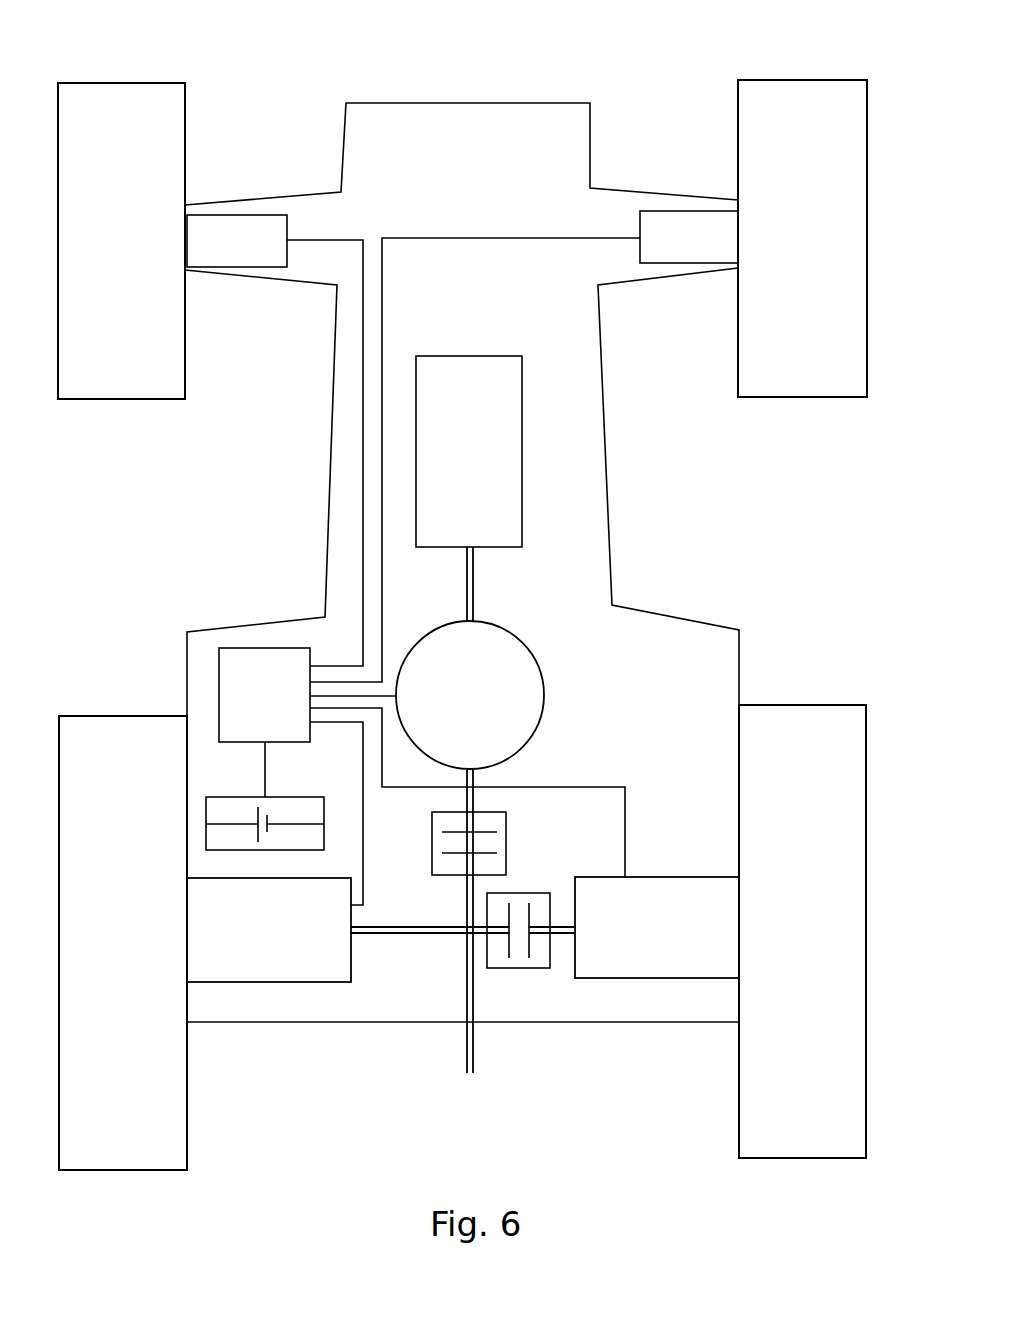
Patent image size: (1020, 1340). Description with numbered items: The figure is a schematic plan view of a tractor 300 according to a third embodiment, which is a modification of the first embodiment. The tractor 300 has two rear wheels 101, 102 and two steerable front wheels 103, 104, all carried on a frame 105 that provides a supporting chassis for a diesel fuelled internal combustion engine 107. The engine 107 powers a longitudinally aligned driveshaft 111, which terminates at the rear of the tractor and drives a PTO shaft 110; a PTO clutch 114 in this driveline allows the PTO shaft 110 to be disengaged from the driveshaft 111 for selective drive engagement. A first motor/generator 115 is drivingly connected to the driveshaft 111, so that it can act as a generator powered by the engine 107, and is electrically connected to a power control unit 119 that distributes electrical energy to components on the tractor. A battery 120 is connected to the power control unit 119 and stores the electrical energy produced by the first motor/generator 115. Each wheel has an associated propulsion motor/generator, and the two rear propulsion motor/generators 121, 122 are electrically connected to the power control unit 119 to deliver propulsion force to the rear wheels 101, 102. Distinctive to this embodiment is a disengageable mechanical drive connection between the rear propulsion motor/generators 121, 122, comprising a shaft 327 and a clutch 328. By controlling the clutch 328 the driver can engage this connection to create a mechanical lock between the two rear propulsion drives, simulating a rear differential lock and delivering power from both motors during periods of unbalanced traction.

The tractor 300 is at (266, 50).
The rear wheel 101 is at (93, 1170).
The rear wheel 102 is at (828, 1158).
The front wheel 103 is at (83, 399).
The front wheel 104 is at (820, 397).
The frame 105 is at (612, 543).
The internal combustion engine 107 is at (485, 476).
The PTO shaft 110 is at (476, 1053).
The driveshaft 111 is at (476, 587).
The PTO clutch 114 is at (506, 838).
The first motor/generator 115 is at (545, 695).
The power control unit 119 is at (272, 711).
The battery 120 is at (316, 797).
The propulsion motor/generator 121 is at (298, 982).
The propulsion motor/generator 122 is at (675, 980).
The shaft 327 is at (417, 935).
The clutch 328 is at (540, 968).